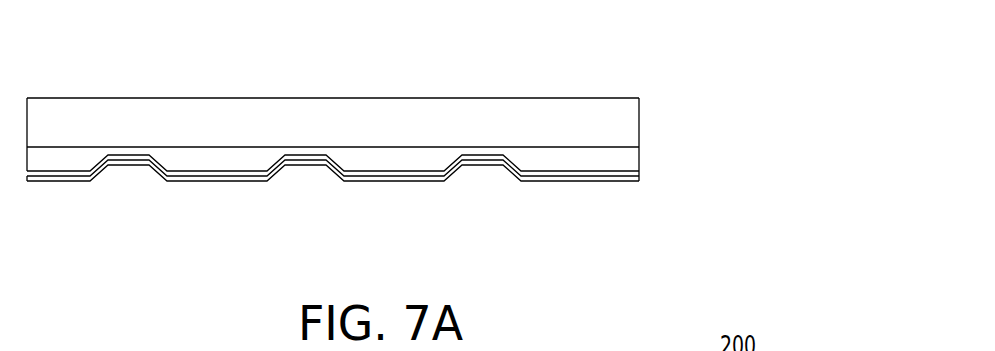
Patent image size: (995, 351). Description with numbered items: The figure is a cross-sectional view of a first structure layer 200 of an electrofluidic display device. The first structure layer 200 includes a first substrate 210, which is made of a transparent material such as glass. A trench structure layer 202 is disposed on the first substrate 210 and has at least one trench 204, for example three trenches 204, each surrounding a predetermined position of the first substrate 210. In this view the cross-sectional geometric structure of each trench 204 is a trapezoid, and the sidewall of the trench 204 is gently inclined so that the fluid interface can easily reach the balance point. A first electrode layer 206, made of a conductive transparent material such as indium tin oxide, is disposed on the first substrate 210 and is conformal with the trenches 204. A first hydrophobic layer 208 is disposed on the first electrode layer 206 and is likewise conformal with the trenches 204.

The first structure layer 200 is at (390, 138).
The first substrate 210 is at (625, 115).
The trench structure layer 202 is at (625, 151).
The trench 204 is at (390, 209).
The first electrode layer 206 is at (639, 172).
The first hydrophobic layer 208 is at (500, 177).